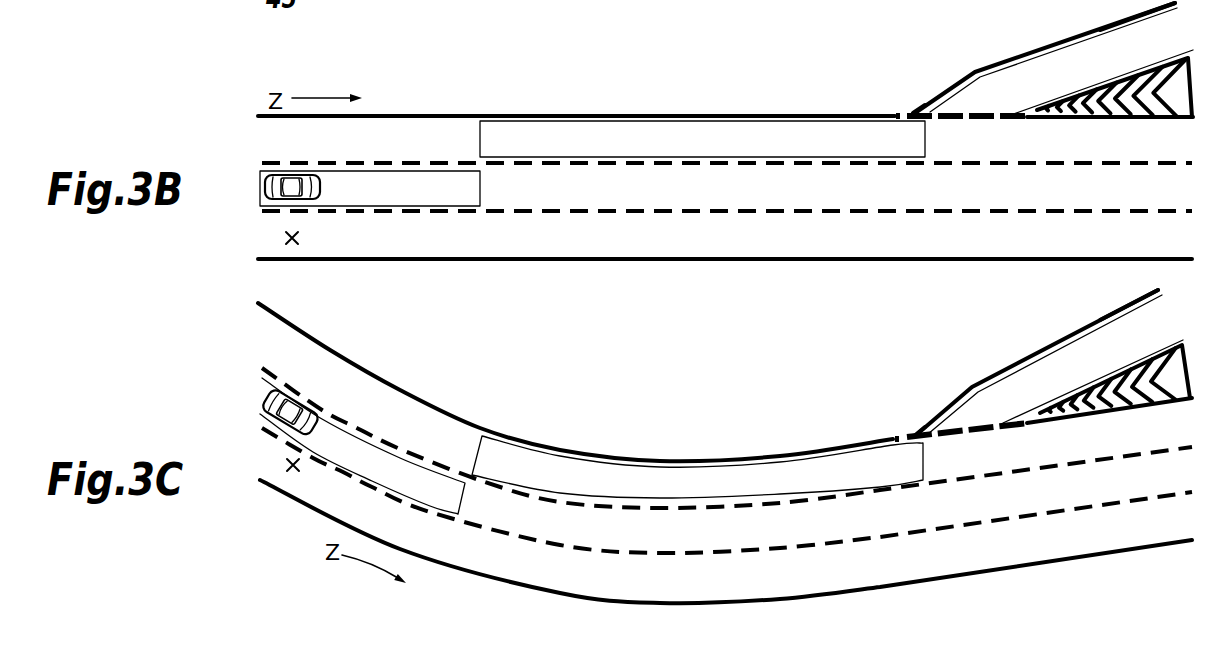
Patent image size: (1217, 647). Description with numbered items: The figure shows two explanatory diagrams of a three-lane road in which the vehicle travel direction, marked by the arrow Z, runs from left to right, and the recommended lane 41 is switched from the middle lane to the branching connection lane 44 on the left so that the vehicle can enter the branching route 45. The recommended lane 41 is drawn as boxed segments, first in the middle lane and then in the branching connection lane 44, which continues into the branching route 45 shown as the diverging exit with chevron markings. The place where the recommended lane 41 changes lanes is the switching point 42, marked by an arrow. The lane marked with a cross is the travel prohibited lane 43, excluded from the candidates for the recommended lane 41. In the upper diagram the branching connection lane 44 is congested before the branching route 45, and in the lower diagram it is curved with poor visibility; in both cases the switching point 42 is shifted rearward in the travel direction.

In FIG. 3B, the recommended lane 41 is at (423, 171).
In FIG. 3C, the recommended lane 41 is at (414, 462).
In FIG. 3B, the switching point 42 is at (481, 108).
In FIG. 3C, the switching point 42 is at (488, 428).
In FIG. 3B, the travel prohibited lane 43 is at (296, 246).
In FIG. 3C, the travel prohibited lane 43 is at (292, 474).
In FIG. 3B, the branching connection lane 44 is at (377, 128).
In FIG. 3C, the branching connection lane 44 is at (334, 375).
In FIG. 3B, the branching route 45 is at (1133, 15).
In FIG. 3C, the branching route 45 is at (1136, 302).